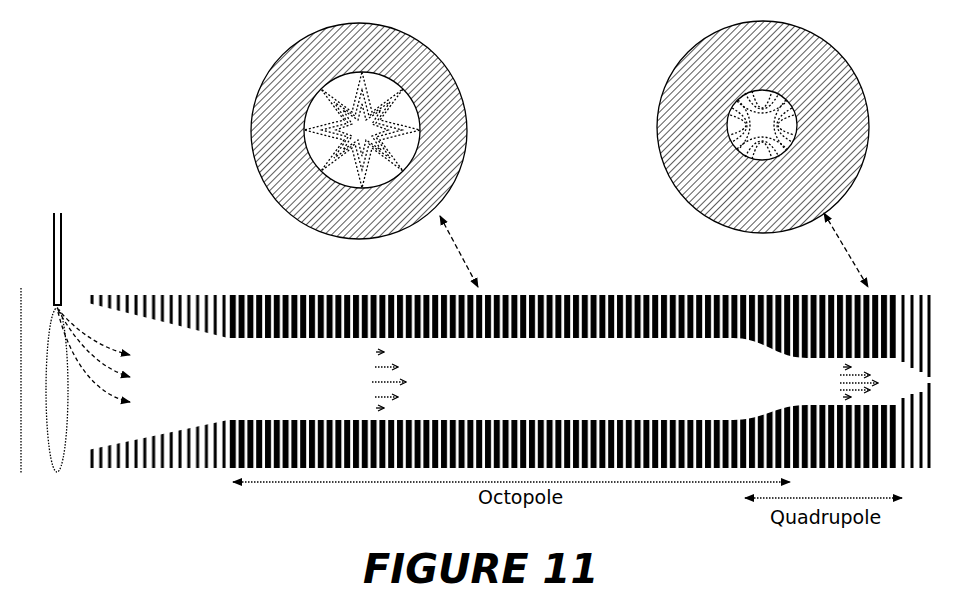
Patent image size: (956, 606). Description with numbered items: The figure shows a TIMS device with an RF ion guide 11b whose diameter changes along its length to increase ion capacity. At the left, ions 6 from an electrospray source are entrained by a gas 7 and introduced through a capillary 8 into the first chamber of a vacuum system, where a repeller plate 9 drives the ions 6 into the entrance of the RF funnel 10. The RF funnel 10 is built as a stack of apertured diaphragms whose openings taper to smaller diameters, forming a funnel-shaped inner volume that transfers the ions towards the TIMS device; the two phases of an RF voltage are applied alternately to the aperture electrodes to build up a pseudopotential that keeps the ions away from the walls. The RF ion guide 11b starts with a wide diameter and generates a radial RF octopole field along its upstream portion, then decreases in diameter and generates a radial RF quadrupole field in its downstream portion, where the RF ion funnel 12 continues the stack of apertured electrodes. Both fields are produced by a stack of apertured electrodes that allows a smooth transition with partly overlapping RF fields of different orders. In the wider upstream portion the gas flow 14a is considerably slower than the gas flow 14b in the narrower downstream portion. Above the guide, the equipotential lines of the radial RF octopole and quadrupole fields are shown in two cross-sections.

The ions 6 is at (93, 355).
The gas 7 is at (57, 390).
The capillary 8 is at (66, 259).
The repeller plate 9 is at (22, 369).
The RF funnel 10 is at (228, 285).
The RF ion guide 11b is at (892, 285).
The RF ion funnel 12 is at (930, 285).
The gas flow 14a is at (369, 380).
The gas flow 14b is at (840, 382).